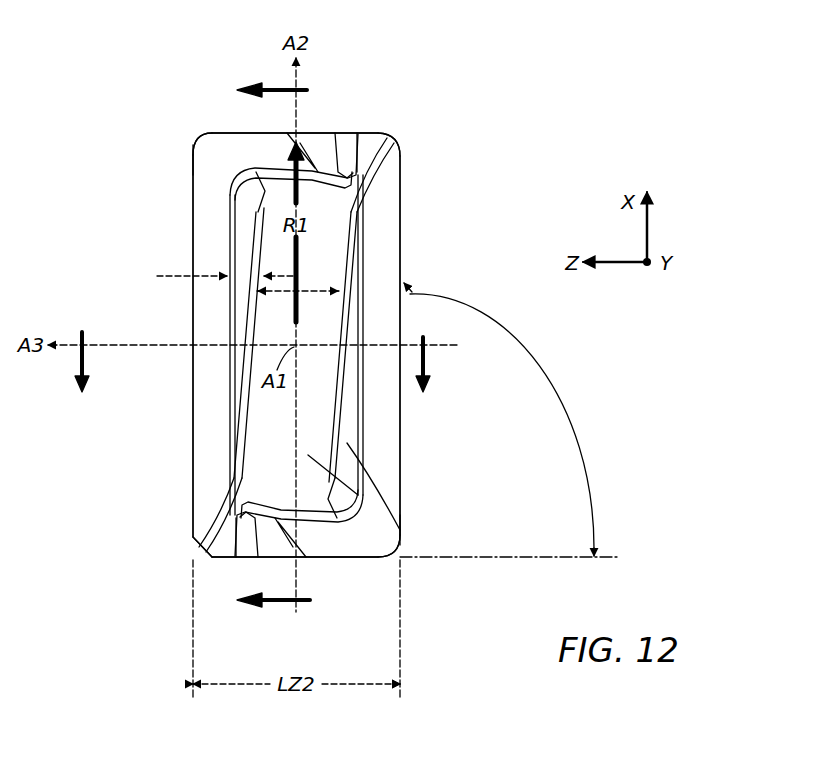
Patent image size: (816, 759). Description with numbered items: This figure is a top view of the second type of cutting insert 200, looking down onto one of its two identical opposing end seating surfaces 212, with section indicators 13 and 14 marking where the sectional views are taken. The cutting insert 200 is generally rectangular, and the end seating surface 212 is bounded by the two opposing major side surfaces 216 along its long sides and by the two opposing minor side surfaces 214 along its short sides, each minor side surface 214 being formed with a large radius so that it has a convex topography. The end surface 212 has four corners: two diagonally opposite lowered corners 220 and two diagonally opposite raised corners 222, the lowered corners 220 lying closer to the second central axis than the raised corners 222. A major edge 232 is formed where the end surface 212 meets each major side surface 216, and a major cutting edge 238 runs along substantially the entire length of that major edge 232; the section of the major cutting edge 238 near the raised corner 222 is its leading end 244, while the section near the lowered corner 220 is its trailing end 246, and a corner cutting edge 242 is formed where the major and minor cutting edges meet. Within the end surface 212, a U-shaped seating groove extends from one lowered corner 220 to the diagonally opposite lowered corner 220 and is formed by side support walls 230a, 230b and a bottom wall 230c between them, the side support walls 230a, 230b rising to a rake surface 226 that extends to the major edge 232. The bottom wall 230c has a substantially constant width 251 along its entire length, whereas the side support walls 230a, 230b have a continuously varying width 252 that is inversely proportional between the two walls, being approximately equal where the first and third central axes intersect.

The cutting insert 200 is at (566, 124).
The end seating surface 212 is at (265, 437).
The minor side surface 214 is at (333, 118).
The major side surface 216 is at (153, 227).
The lowered corner 220 is at (197, 554).
The raised corner 222 is at (197, 133).
The rake surface 226 is at (207, 398).
The side support wall 230a is at (250, 318).
The side support wall 230b is at (360, 460).
The bottom wall 230c is at (365, 522).
The major edge 232 is at (192, 262).
The major cutting edge 238 is at (195, 340).
The corner cutting edge 242 is at (192, 142).
The leading end 244 is at (193, 208).
The trailing end 246 is at (193, 495).
The width of bottom wall 251 is at (313, 288).
The width of side support wall 252 is at (205, 276).
The section line 13- 13 is at (254, 347).
The section line 14- 14 is at (254, 344).